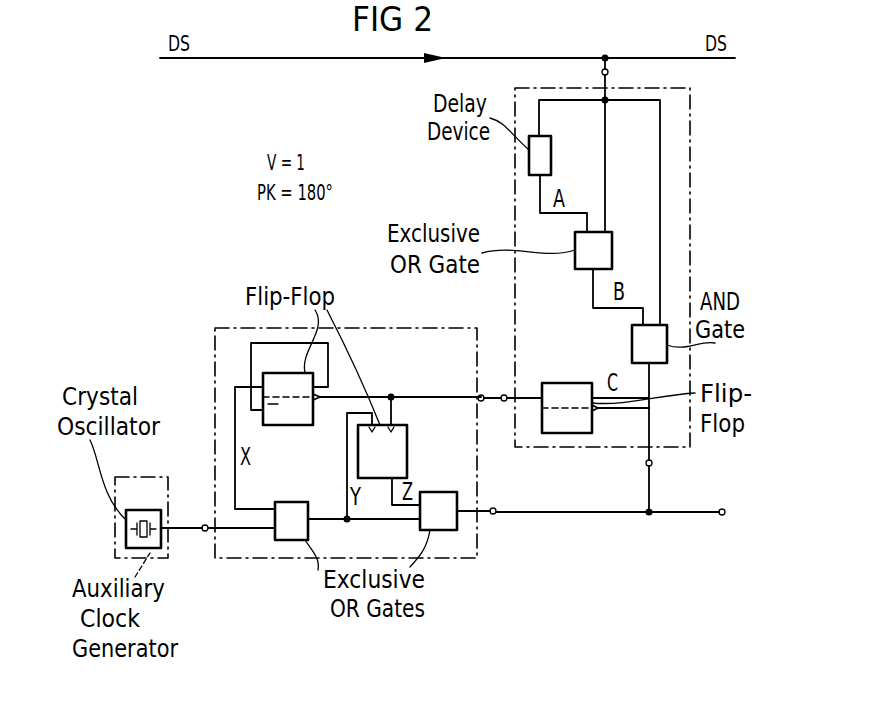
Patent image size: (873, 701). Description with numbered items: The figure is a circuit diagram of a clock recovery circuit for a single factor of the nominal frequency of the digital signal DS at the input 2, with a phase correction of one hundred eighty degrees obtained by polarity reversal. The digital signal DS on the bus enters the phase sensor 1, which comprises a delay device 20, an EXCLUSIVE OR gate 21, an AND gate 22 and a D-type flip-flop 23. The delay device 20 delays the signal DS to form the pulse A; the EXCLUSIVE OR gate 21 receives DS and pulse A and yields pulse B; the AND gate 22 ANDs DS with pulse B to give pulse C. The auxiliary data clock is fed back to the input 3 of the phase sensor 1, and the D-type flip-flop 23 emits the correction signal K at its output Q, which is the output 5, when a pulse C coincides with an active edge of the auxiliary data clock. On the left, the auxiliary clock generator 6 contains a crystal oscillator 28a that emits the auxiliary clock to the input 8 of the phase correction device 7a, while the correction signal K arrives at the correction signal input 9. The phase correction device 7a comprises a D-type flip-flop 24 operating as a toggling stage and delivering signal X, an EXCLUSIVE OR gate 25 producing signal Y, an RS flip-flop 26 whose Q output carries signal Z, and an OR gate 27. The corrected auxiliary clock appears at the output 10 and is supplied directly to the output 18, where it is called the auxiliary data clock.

The phase sensor 1 is at (700, 246).
The input 2 is at (611, 79).
The input of the phase sensor 3 is at (655, 463).
The output of the flip-flop 5 is at (521, 414).
The auxiliary clock generator 6 is at (127, 477).
The phase correction device 7a is at (392, 328).
The input of the phase correction device 8 is at (223, 513).
The correction signal input 9 is at (489, 402).
The output of the phase correction device 10 is at (498, 497).
The output 18 is at (622, 505).
The delay device 20 is at (551, 156).
The EXCLUSIVE OR gate 21 is at (612, 250).
The AND gate 22 is at (632, 345).
The D-type flip-flop 23 is at (561, 383).
The D-type flip-flop 24 is at (286, 373).
The EXCLUSIVE OR gate 25 is at (283, 502).
The RS flip-flop 26 is at (407, 455).
The OR gate 27 is at (437, 492).
The crystal oscillator 28a is at (164, 516).